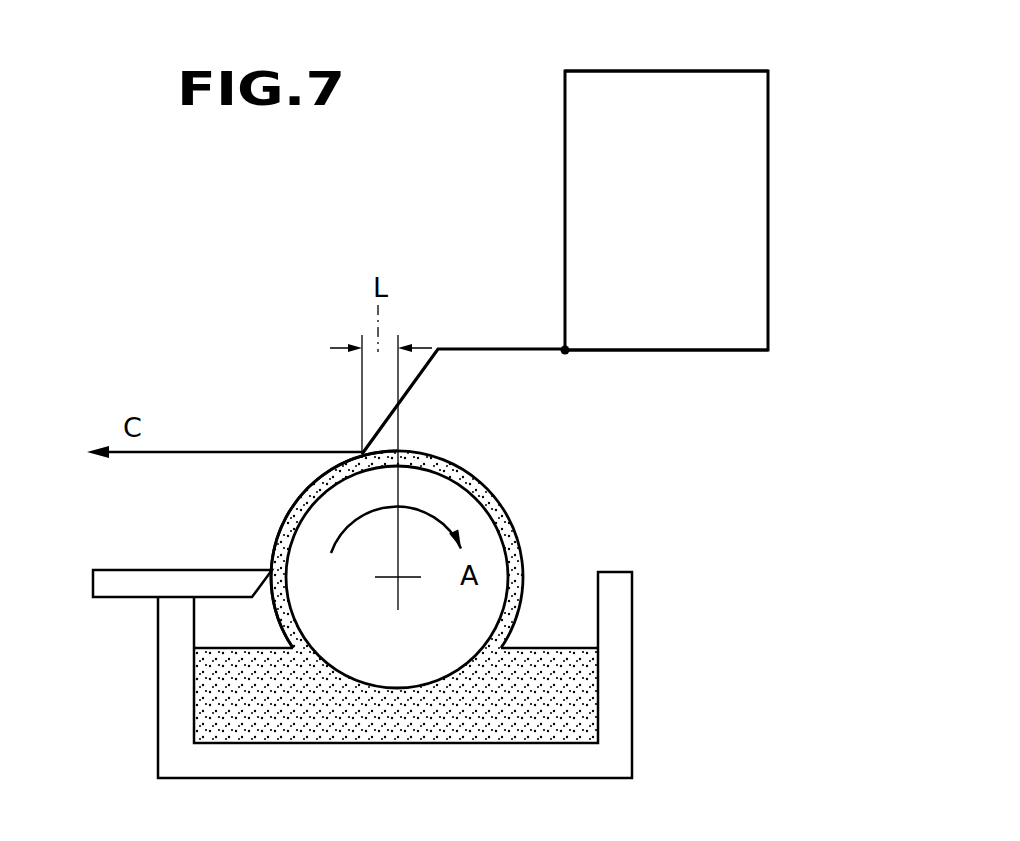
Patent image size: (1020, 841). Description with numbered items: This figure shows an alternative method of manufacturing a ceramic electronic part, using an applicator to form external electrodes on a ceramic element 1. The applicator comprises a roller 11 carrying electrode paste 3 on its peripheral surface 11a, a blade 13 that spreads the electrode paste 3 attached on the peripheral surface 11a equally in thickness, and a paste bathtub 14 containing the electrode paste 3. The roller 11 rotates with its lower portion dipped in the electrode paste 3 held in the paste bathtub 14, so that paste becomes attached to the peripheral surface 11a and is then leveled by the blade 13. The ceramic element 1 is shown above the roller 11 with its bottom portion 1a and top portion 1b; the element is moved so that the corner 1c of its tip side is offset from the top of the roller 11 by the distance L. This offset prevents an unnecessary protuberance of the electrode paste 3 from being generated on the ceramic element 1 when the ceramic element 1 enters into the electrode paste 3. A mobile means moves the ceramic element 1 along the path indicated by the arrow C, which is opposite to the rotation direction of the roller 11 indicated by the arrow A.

The ceramic element 1 is at (768, 183).
The bottom portion of supply unit 1a is at (715, 350).
The top portion of supply unit 1b is at (657, 71).
The corner 1c is at (567, 353).
The electrode paste 3 is at (308, 486).
The roller 11 is at (505, 535).
The peripheral surface 11a is at (290, 520).
The blade 13 is at (165, 570).
The paste bathtub 14 is at (158, 690).